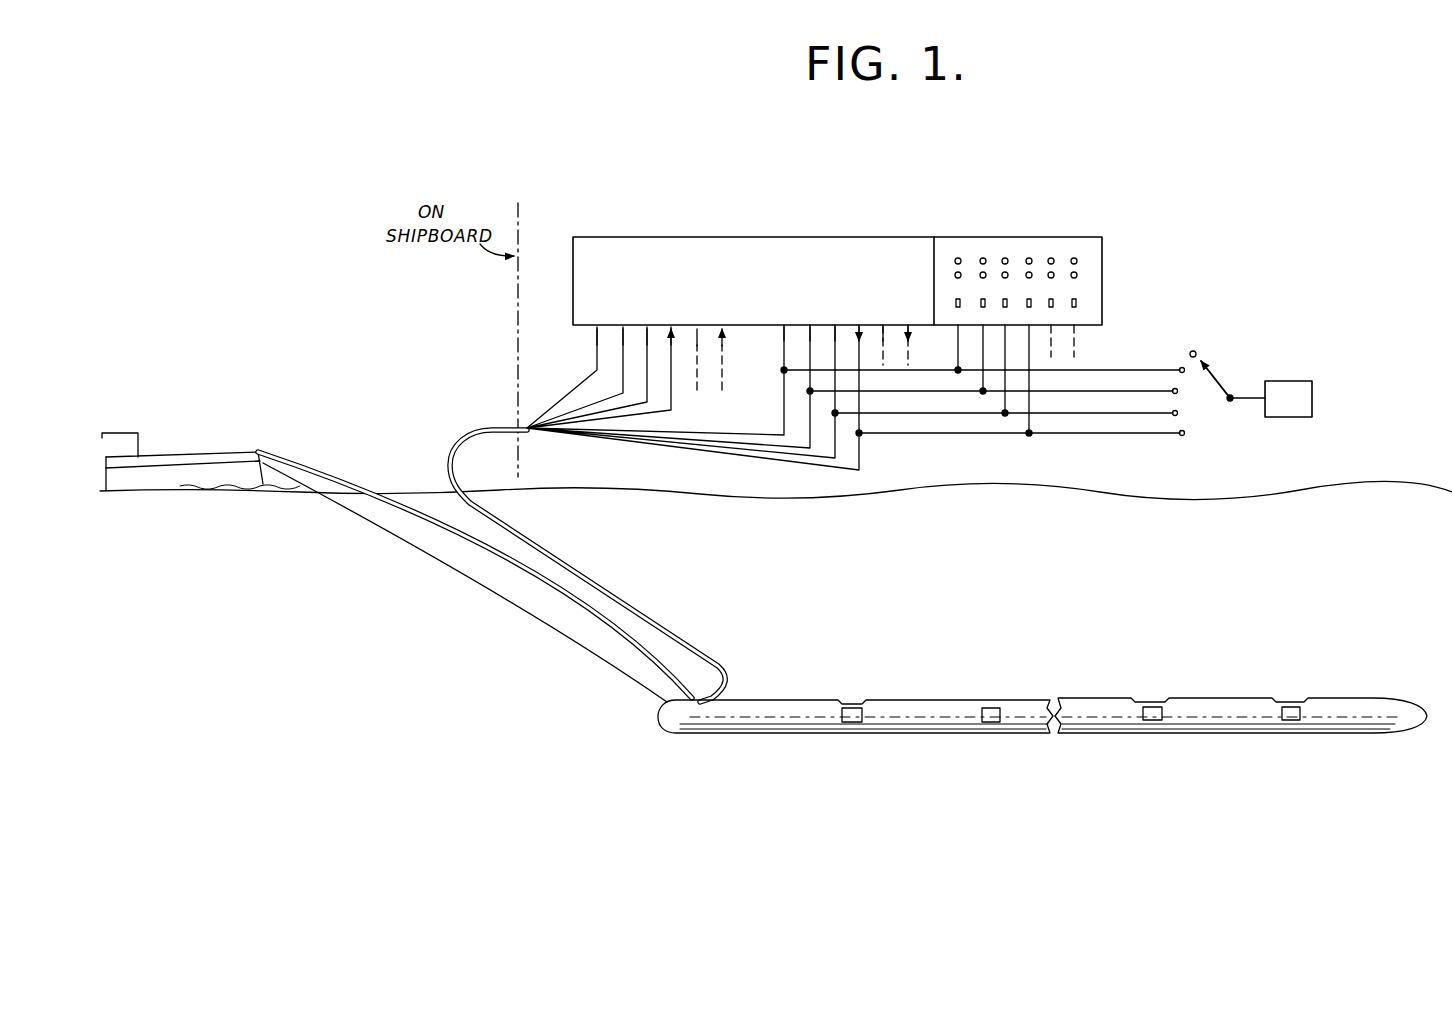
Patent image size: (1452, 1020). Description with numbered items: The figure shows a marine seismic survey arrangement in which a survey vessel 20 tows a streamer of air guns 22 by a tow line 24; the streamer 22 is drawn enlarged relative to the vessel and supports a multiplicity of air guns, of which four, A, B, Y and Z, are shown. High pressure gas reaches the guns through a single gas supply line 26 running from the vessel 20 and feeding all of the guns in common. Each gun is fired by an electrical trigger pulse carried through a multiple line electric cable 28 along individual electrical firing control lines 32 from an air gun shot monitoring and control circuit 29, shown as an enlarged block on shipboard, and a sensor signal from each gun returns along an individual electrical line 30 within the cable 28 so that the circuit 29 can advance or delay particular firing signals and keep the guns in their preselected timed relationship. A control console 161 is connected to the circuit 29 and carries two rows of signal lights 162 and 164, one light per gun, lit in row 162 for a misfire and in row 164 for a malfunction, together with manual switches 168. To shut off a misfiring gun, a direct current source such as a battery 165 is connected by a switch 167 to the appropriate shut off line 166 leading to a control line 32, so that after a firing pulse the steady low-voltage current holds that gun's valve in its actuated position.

The survey vessel 20 is at (227, 438).
The streamer of air guns 22 is at (1042, 679).
The tow line 24 is at (549, 631).
The gas supply line 26 is at (320, 478).
The multiple line electric cable 28 is at (552, 563).
The air gun shot monitoring and control circuit 29 is at (616, 235).
The electrical line 30 is at (640, 376).
The electrical firing control line 32 is at (719, 451).
The control console 161 is at (1033, 231).
The row of signal lights 162 is at (1088, 260).
The row of signal lights 164 is at (1088, 272).
The battery 165 is at (1297, 381).
The shut off line 166 is at (896, 370).
The switch 167 is at (1218, 366).
The manual switch 168 is at (1088, 305).
The air gun A is at (850, 690).
The air gun B is at (987, 690).
The air gun Y is at (1150, 687).
The air gun Z is at (1285, 688).